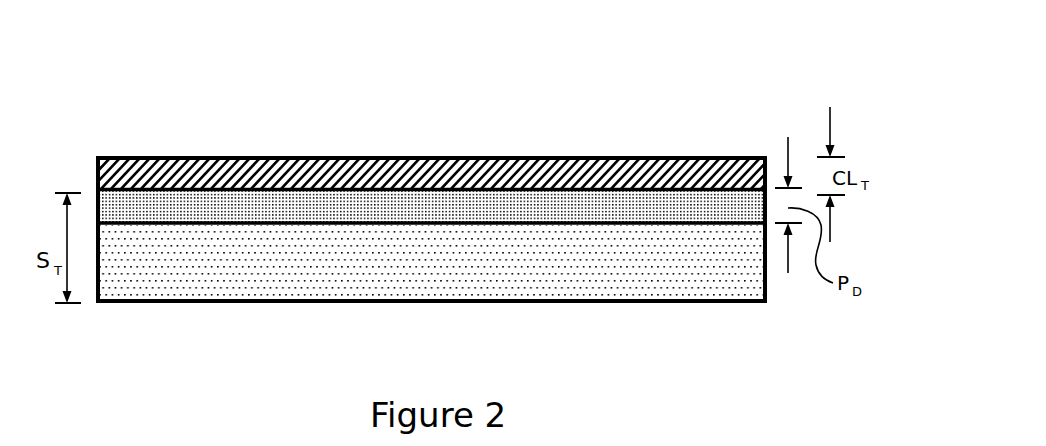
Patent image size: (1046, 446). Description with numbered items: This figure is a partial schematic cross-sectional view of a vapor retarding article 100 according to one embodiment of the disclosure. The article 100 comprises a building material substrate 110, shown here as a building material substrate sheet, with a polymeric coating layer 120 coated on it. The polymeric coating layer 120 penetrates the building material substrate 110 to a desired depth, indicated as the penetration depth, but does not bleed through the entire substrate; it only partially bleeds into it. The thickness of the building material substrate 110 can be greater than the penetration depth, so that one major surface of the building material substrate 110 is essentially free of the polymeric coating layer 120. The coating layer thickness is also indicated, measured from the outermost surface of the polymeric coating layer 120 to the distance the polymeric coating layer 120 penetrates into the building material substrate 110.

The article 100 is at (105, 127).
The building material substrate 110 is at (212, 280).
The polymeric coating layer 120 is at (256, 157).